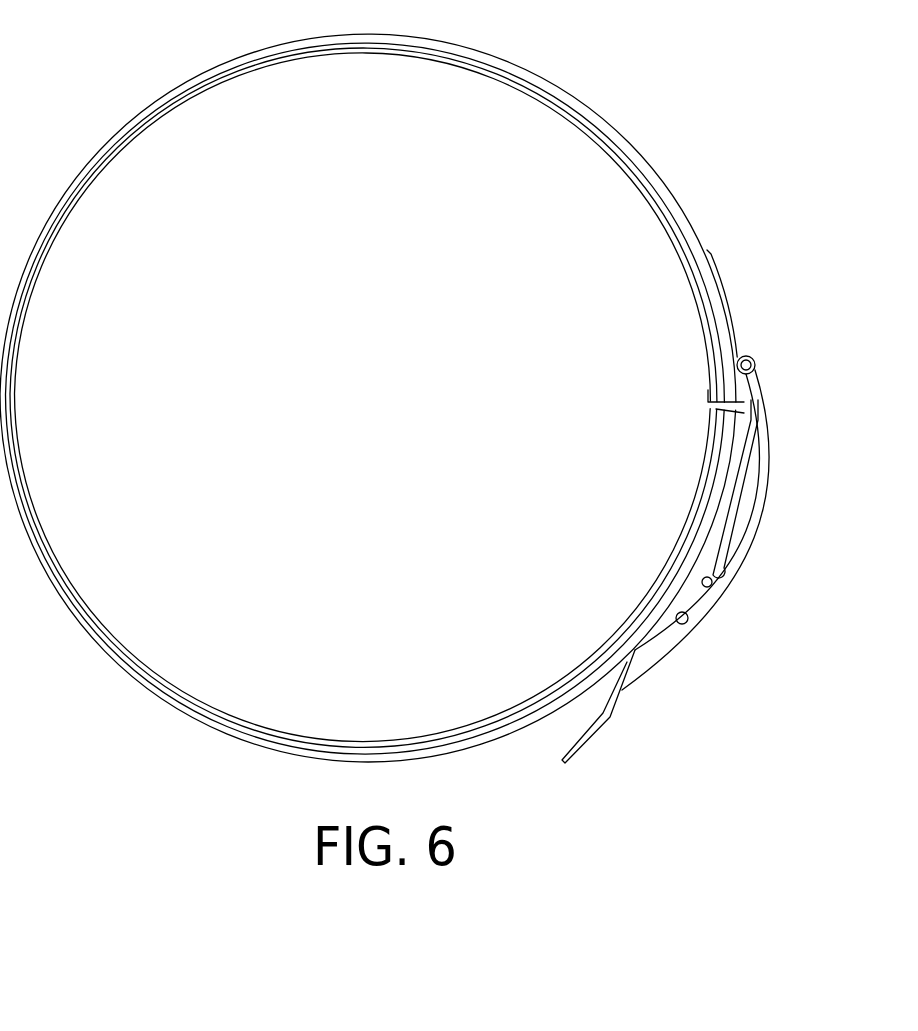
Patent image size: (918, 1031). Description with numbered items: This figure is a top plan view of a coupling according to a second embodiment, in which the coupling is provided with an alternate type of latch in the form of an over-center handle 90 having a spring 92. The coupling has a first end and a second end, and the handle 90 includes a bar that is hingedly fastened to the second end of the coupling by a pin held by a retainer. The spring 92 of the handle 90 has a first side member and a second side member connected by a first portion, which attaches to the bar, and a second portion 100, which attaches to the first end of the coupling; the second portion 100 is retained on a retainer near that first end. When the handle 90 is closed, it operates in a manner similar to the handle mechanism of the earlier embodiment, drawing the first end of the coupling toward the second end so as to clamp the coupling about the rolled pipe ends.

The second portion 100 is at (746, 356).
The over-center handle 90 is at (777, 456).
The spring 92 is at (750, 546).